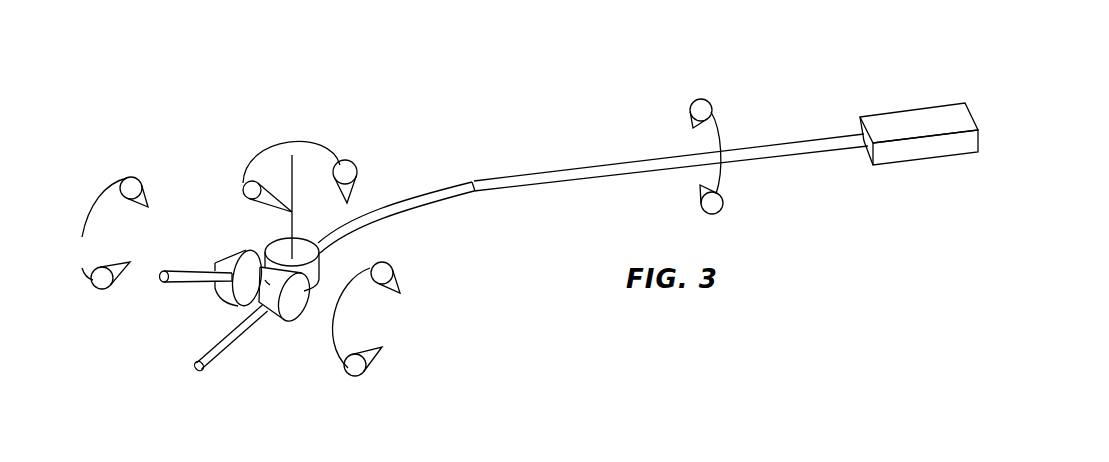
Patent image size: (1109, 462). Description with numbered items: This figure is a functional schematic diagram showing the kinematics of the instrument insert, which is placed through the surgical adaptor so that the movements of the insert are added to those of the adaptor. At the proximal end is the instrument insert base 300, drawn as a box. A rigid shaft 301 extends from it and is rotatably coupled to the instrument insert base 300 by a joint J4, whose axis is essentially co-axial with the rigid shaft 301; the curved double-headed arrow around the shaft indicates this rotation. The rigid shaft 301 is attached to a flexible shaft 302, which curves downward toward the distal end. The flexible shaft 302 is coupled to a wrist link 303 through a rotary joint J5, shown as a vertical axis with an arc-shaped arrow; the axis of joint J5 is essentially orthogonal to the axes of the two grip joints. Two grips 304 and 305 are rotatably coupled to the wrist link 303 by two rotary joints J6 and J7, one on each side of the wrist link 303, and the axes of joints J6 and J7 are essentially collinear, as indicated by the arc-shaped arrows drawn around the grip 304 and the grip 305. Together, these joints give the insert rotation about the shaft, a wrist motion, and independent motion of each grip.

The instrument insert base 300 is at (903, 117).
The rigid shaft 301 is at (650, 162).
The flexible shaft 302 is at (417, 196).
The wrist link 303 is at (270, 250).
The grip 304 is at (230, 257).
The grip 305 is at (300, 318).
The joint J4 is at (717, 156).
The rotary joint J5 is at (291, 173).
The rotary joint J6 is at (218, 269).
The rotary joint J7 is at (297, 298).